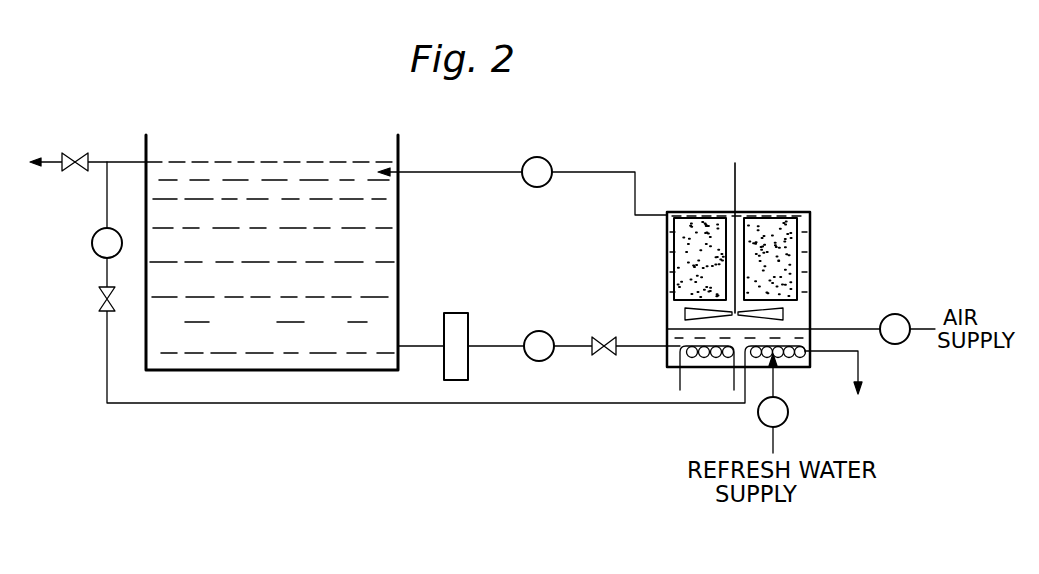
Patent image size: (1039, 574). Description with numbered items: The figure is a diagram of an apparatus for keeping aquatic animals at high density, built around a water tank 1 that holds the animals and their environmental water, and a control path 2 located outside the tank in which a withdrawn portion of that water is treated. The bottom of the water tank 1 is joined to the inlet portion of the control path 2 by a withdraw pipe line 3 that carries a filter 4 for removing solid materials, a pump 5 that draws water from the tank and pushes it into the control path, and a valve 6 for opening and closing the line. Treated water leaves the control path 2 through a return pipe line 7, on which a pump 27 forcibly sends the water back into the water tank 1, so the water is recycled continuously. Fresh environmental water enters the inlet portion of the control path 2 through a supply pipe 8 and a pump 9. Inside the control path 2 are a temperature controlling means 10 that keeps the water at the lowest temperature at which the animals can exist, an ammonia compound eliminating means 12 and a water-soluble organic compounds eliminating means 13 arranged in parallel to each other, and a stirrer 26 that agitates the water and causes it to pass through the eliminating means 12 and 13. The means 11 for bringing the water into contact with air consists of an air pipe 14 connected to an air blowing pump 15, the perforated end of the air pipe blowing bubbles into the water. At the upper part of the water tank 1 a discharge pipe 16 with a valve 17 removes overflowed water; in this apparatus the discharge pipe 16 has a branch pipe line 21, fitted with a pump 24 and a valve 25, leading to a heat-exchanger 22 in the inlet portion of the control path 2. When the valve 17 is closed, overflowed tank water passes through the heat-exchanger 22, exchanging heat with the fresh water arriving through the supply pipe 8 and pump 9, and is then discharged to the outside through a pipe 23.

The water tank 1 is at (382, 270).
The control path 2 is at (824, 252).
The withdraw pipe line 3 is at (497, 349).
The filter 4 is at (458, 323).
The pump 5 is at (539, 332).
The valve 6 is at (603, 336).
The return pipe line 7 is at (461, 172).
The supply pipe 8 is at (773, 382).
The pump 9 is at (788, 423).
The temperature controlling means 10 is at (673, 356).
The means for bringing water into contact with air 11 is at (774, 327).
The ammonia compound eliminating means 12 is at (784, 272).
The water-soluble organic compounds eliminating means 13 is at (682, 270).
The air pipe 14 is at (870, 325).
The air blowing pump 15 is at (912, 321).
The discharge pipe 16 is at (122, 160).
The valve 17 is at (79, 157).
The branch pipe line 21 is at (106, 214).
The heat-exchanger 22 is at (807, 352).
The pipe 23 is at (858, 364).
The pump 24 is at (91, 244).
The valve 25 is at (99, 298).
The stirrer 26 is at (738, 178).
The pump 27 is at (553, 166).